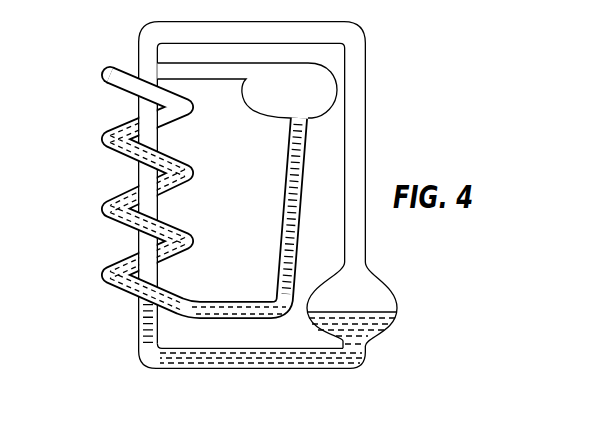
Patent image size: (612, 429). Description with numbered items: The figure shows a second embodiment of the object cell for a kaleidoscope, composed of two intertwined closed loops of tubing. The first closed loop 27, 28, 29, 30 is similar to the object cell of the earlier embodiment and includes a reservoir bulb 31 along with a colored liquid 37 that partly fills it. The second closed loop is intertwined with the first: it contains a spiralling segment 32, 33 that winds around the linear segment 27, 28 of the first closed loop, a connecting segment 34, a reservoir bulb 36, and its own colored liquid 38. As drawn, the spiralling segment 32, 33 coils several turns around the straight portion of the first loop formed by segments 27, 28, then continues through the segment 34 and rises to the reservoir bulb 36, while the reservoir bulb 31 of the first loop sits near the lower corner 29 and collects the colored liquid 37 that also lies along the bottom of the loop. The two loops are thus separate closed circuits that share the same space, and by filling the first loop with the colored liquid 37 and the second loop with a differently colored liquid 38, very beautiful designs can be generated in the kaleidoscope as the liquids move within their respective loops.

The first closed loop segment 27 is at (143, 31).
The first closed loop segment 28 is at (138, 361).
The first closed loop segment 29 is at (367, 365).
The first closed loop segment 30 is at (362, 33).
The reservoir bulb 31 is at (370, 294).
The spiralling segment 32 is at (103, 76).
The spiralling segment 33 is at (237, 83).
The second closed loop segment 34 is at (270, 302).
The reservoir bulb 36 is at (300, 101).
The colored liquid 37 is at (288, 358).
The colored liquid 38 is at (281, 213).